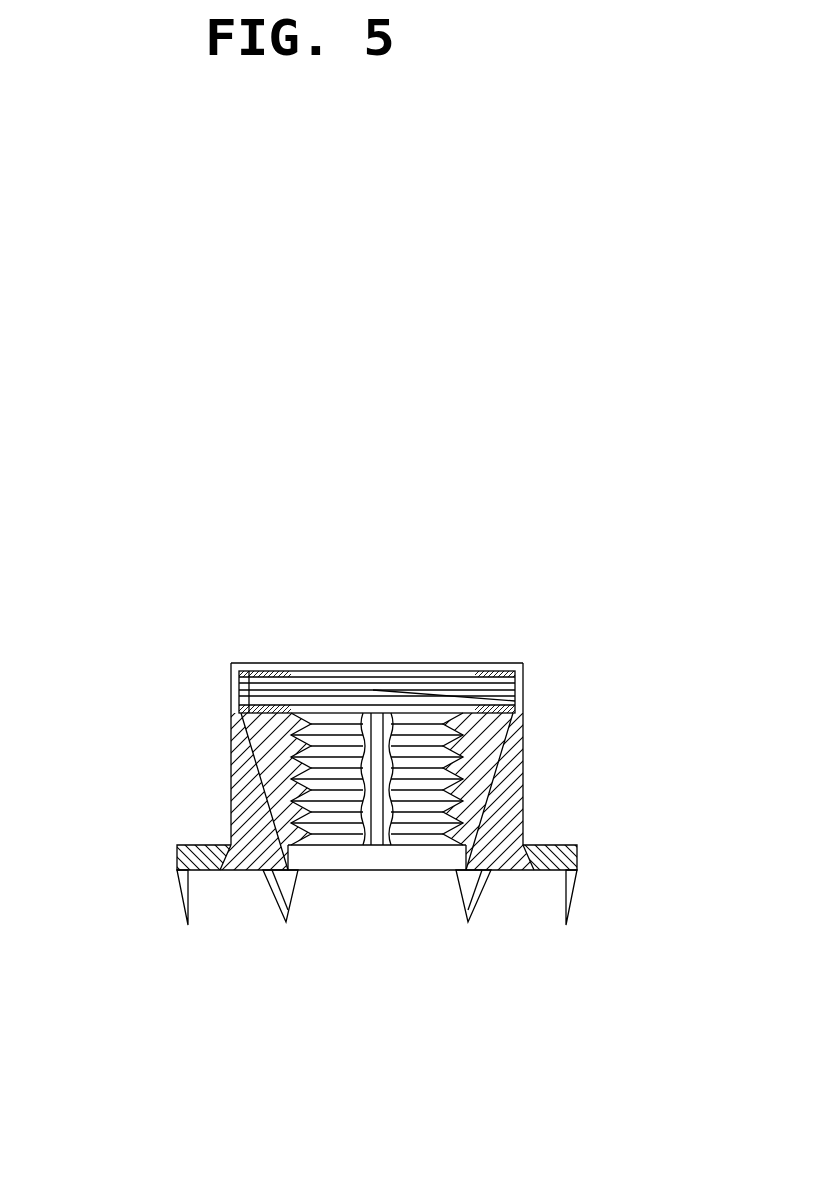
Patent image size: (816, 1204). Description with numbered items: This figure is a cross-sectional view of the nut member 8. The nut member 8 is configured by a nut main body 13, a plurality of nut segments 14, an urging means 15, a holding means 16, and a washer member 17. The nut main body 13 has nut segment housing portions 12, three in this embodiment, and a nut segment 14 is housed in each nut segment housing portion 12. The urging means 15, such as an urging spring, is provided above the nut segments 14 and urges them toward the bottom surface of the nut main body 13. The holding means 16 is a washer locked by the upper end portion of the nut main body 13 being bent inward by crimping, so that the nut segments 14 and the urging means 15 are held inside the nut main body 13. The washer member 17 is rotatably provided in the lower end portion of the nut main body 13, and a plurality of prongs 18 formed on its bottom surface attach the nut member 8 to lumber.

The nut member 8 is at (392, 436).
The nut segment housing portion 12 is at (253, 690).
The nut main body 13 is at (523, 773).
The nut segment 14 is at (290, 722).
The urging means 15 is at (373, 690).
The holding means 16 is at (494, 656).
The washer member 17 is at (195, 845).
The prong 18 is at (182, 888).